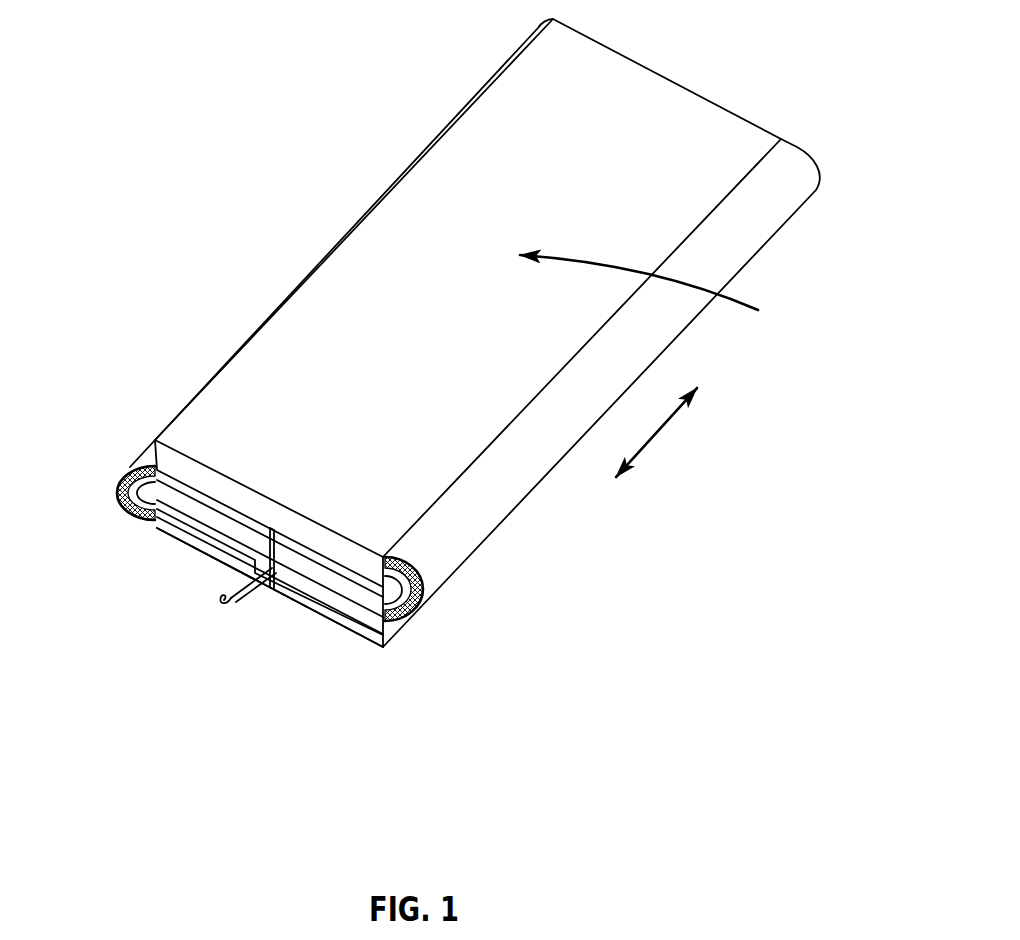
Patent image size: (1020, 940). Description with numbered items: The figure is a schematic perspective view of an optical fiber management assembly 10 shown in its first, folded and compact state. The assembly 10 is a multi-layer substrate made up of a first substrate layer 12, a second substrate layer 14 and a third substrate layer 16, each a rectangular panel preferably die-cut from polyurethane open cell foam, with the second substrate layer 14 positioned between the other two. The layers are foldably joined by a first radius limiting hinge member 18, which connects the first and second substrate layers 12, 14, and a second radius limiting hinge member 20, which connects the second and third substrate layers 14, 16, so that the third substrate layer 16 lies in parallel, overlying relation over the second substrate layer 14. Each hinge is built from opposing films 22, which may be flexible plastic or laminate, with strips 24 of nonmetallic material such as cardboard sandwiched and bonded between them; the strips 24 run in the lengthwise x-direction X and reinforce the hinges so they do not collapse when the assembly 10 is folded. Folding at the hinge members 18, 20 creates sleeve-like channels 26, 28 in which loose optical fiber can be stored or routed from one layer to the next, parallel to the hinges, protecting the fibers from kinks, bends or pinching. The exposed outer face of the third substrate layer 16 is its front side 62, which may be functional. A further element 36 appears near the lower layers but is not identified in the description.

The optical fiber management assembly 10 is at (216, 143).
The first substrate layer 12 is at (292, 616).
The second substrate layer 14 is at (332, 590).
The third substrate layer 16 is at (360, 570).
The first radius limiting hinge member 18 is at (108, 483).
The second radius limiting hinge member 20 is at (192, 384).
The films 22 is at (150, 462).
The strips 24 is at (122, 508).
The channel 26 is at (141, 493).
The channel 28 is at (391, 620).
The flexible cable 36 is at (252, 606).
The front side 62 is at (653, 297).
The x-direction X is at (657, 430).